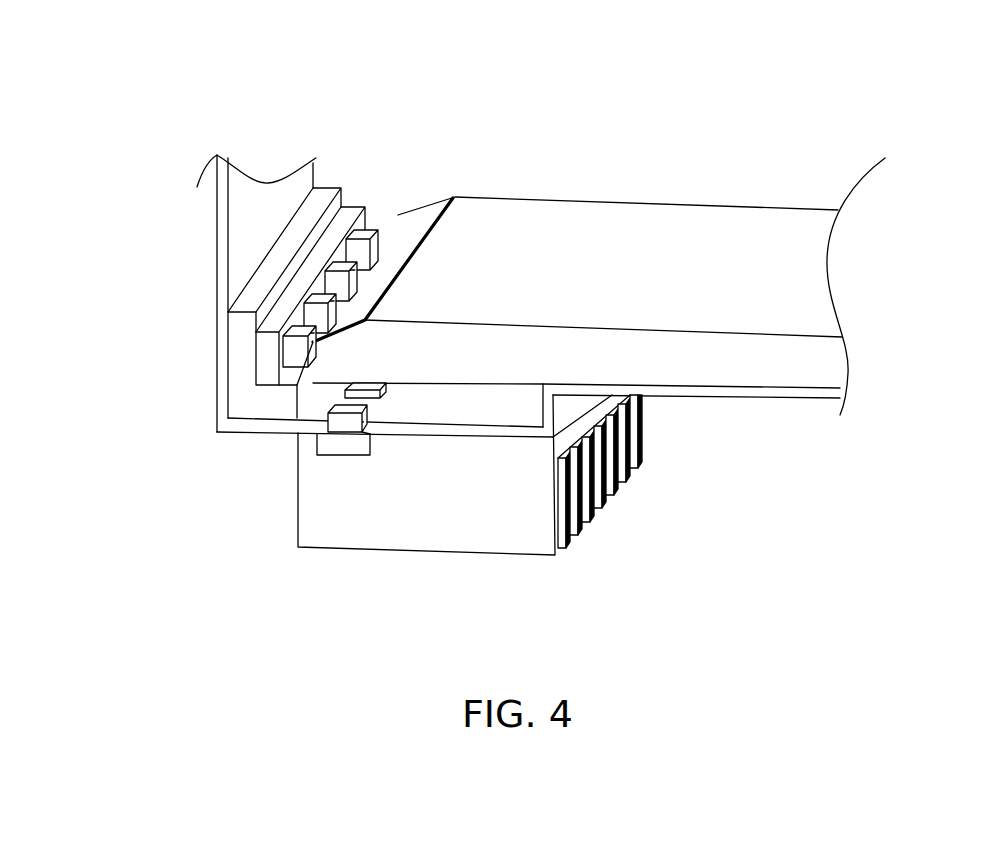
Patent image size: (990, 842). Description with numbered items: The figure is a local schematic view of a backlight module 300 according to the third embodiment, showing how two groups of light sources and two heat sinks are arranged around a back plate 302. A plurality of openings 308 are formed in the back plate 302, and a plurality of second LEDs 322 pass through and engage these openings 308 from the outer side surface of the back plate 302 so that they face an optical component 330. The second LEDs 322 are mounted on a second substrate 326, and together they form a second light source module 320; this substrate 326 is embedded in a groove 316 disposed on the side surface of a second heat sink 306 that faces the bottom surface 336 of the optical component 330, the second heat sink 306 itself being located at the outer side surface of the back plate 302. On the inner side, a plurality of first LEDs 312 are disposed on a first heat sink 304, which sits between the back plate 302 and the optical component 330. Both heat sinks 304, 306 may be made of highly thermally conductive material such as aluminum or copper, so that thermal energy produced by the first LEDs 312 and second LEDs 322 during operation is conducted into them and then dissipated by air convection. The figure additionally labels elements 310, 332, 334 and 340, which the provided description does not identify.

The backlight module 300 is at (553, 87).
The back plate 302 is at (225, 293).
The first heat sink 304 is at (242, 365).
The second heat sink 306 is at (477, 523).
The openings 308 is at (370, 447).
The guide structure 310 is at (446, 104).
The first LEDs 312 is at (375, 247).
The groove 316 is at (347, 218).
The second light source module 320 is at (345, 596).
The second LEDs 322 is at (343, 423).
The second substrate 326 is at (353, 443).
The optical component 330 is at (798, 377).
The top plate 332 is at (620, 232).
The contact edge 334 is at (297, 385).
The bottom surface 336 is at (480, 383).
The tapered guide portion 340 is at (405, 243).